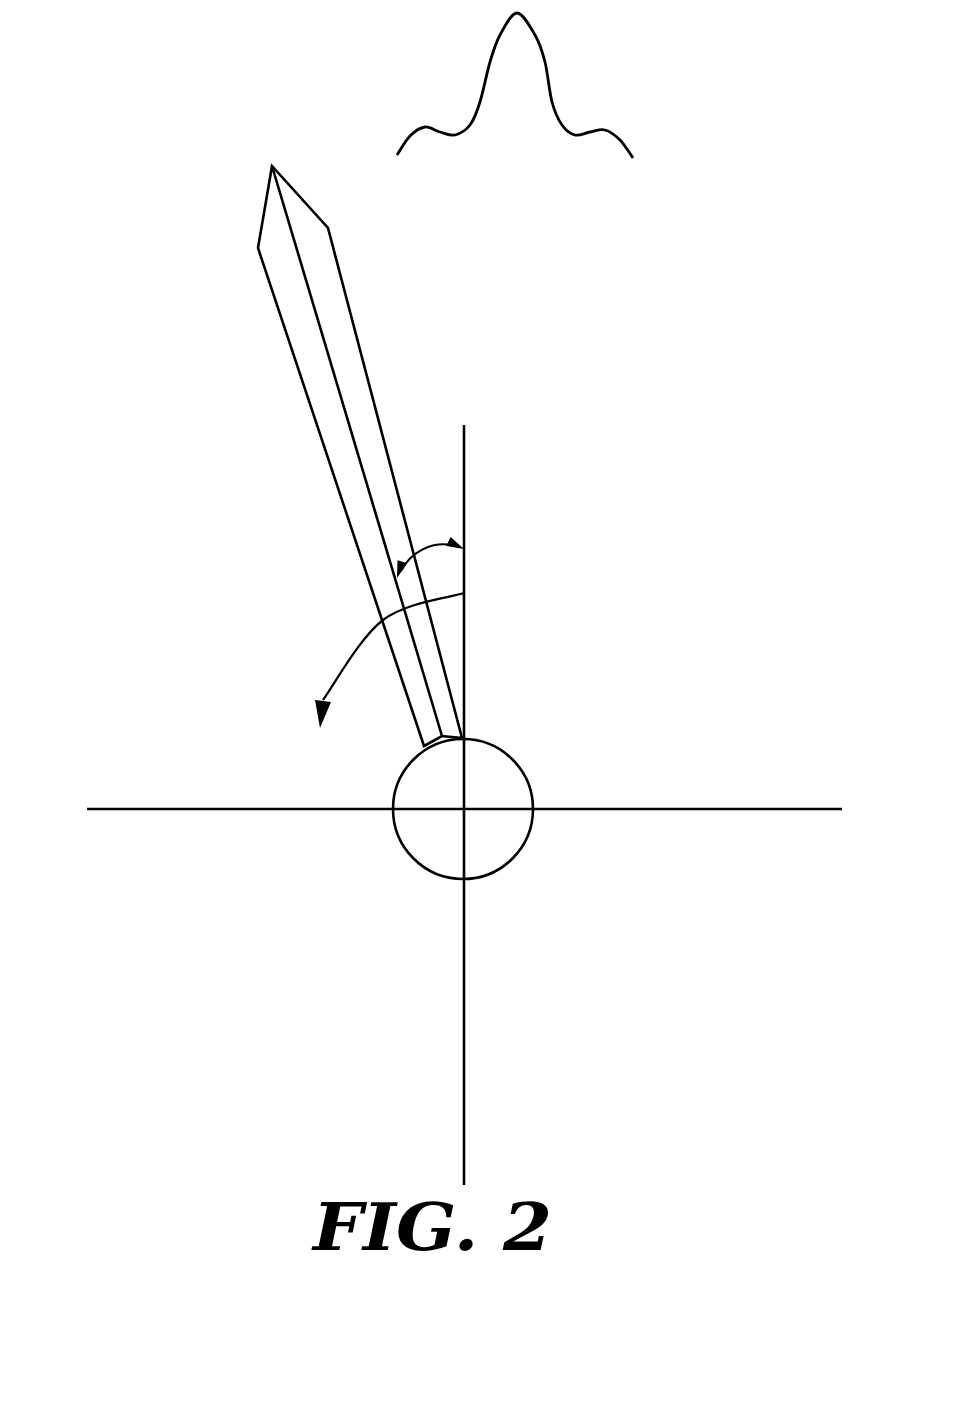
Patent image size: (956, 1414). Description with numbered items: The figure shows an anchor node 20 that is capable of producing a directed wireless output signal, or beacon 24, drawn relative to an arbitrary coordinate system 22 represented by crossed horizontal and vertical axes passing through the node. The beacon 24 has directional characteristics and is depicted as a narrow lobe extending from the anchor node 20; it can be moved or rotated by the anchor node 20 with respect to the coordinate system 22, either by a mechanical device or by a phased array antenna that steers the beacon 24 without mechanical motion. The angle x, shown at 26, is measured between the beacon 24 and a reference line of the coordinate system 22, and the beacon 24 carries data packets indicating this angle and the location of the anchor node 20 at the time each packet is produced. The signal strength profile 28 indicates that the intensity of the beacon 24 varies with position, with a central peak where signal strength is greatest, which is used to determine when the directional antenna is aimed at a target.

The anchor node 20 is at (433, 862).
The coordinate system 22 is at (195, 808).
The beacon 24 is at (305, 345).
The angle x 26 is at (433, 540).
The signal strength profile 28 is at (636, 58).